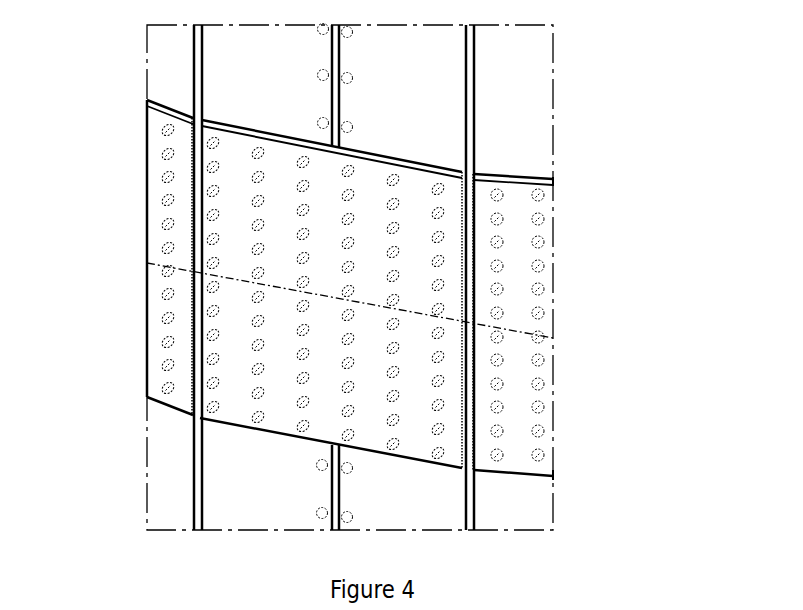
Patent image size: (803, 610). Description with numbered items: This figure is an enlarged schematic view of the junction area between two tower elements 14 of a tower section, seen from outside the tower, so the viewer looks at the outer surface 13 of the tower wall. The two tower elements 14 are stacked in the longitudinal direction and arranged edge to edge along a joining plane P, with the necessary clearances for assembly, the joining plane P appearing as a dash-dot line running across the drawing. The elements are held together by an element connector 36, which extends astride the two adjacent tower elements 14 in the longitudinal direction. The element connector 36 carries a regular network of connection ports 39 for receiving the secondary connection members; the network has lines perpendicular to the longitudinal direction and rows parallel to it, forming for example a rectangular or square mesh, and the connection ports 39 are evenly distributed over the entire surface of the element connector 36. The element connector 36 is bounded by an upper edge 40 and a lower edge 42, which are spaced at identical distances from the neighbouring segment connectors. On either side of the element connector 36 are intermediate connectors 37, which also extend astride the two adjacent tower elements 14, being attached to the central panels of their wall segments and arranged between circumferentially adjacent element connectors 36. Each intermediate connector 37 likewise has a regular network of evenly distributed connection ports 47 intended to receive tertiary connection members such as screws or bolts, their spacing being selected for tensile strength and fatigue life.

The outer surface 13 is at (334, 277).
The tower elements 14 is at (592, 91).
The element connector 36 is at (252, 271).
The intermediate connector 37 is at (162, 177).
The connection ports 39 is at (208, 146).
The upper edge 40 is at (234, 125).
The lower edge 42 is at (247, 427).
The connection ports 47 is at (163, 230).
The joining plane P is at (518, 323).